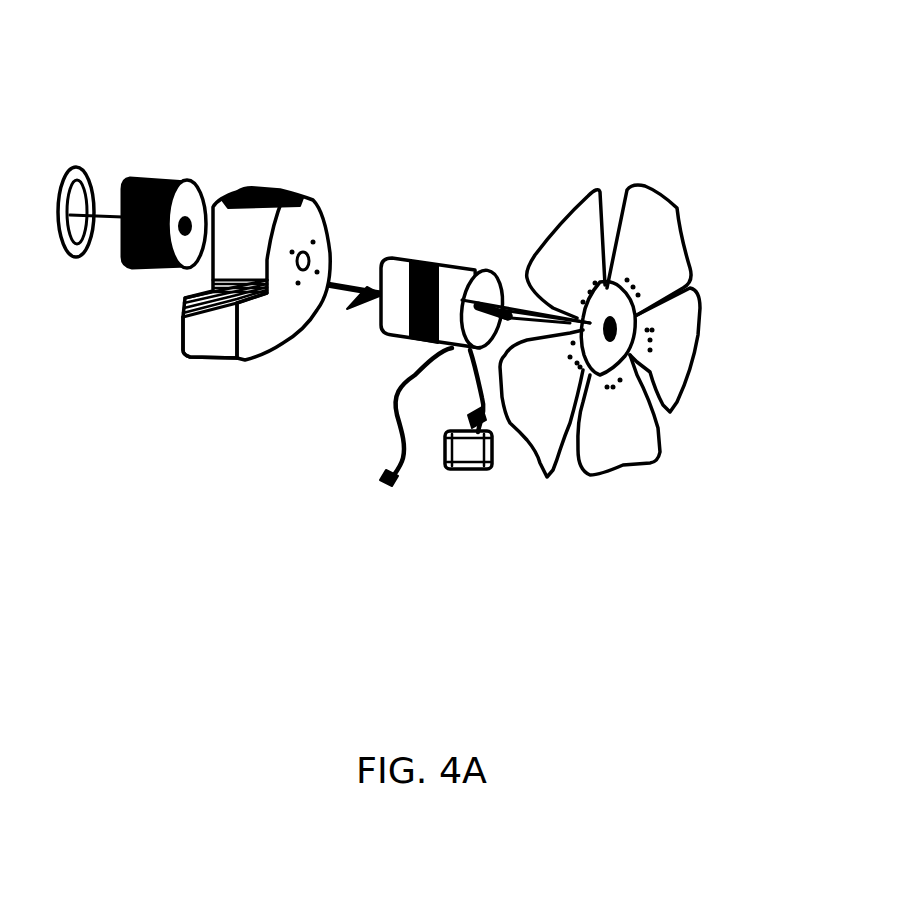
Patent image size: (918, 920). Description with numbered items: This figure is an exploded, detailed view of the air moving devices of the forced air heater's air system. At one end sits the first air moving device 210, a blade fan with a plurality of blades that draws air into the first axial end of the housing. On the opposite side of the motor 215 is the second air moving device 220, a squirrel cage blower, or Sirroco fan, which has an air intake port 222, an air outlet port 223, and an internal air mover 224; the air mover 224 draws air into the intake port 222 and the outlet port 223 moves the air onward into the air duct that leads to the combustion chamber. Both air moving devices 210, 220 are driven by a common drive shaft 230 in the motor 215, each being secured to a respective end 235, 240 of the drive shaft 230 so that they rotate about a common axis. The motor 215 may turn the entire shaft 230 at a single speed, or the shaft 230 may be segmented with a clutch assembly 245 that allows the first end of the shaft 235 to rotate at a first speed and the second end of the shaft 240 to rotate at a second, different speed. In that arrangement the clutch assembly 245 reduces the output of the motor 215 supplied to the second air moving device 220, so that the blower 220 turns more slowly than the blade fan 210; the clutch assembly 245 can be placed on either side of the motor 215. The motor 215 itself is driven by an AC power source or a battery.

The first air moving device 210 is at (653, 223).
The motor 215 is at (473, 270).
The second air moving device 220 is at (307, 197).
The air intake port 222 is at (230, 193).
The air outlet port 223 is at (180, 318).
The internal air mover 224 is at (192, 188).
The drive shaft 230 is at (357, 298).
The first end of the shaft 235 is at (487, 345).
The second end of the shaft 240 is at (340, 282).
The clutch assembly 245 is at (403, 258).